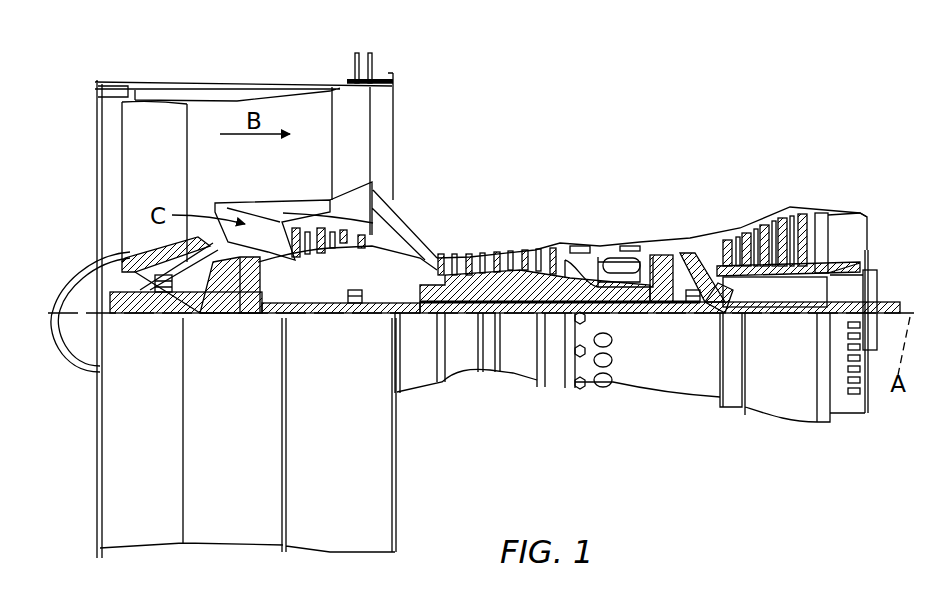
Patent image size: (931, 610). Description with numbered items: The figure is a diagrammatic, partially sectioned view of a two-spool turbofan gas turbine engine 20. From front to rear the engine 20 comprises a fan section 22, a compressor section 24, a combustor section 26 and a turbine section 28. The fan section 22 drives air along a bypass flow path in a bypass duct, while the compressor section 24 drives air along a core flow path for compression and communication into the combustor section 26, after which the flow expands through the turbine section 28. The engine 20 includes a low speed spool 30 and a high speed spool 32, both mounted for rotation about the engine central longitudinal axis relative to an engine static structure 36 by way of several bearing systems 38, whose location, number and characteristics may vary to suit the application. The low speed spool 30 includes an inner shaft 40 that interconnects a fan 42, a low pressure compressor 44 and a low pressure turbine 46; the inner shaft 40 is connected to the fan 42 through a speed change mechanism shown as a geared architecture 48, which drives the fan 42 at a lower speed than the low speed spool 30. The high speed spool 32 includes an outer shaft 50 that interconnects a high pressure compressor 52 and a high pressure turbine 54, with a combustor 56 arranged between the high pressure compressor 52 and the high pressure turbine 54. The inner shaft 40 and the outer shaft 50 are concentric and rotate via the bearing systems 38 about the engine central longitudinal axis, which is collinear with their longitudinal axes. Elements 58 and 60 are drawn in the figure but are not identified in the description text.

The gas turbine engine 20 is at (640, 91).
The fan section 22 is at (268, 66).
The compressor section 24 is at (278, 170).
The combustor section 26 is at (612, 170).
The turbine section 28 is at (830, 170).
The low speed spool 30 is at (520, 320).
The high speed spool 32 is at (558, 257).
The engine static structure 36 is at (557, 386).
The bearing systems 38 is at (160, 290).
The inner shaft 40 is at (425, 320).
The fan 42 is at (170, 181).
The low pressure compressor 44 is at (340, 230).
The low pressure turbine 46 is at (770, 208).
The geared architecture 48 is at (247, 313).
The outer shaft 50 is at (608, 303).
The high pressure compressor 52 is at (503, 287).
The high pressure turbine 54 is at (670, 247).
The combustor 56 is at (620, 265).
The mid-turbine frame 58 is at (709, 229).
The mid-turbine frame airfoils 60 is at (717, 298).